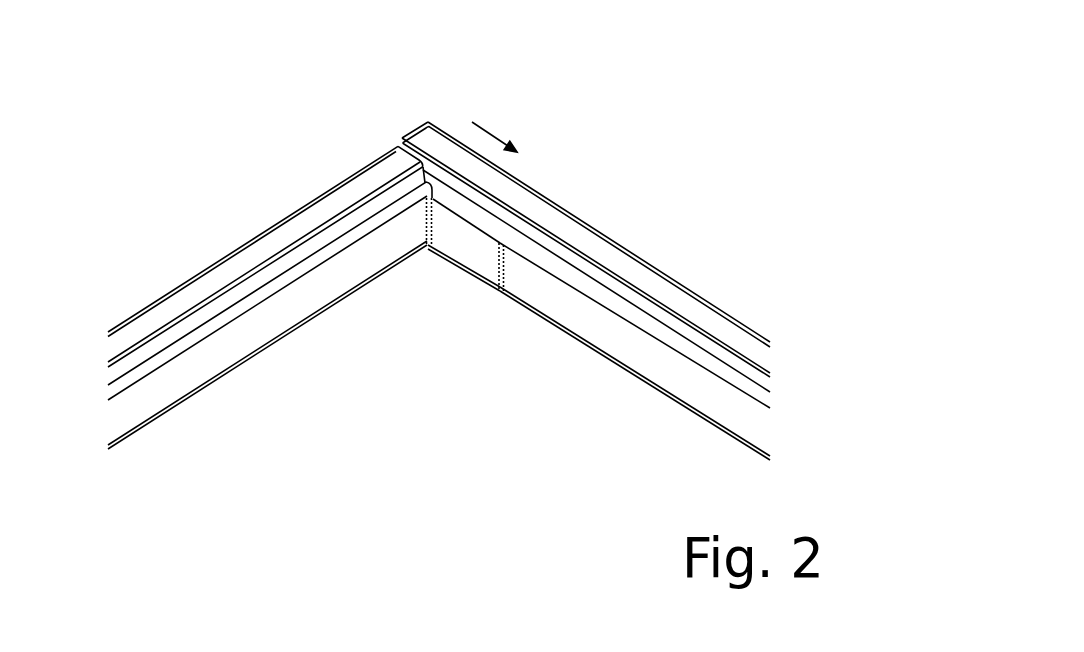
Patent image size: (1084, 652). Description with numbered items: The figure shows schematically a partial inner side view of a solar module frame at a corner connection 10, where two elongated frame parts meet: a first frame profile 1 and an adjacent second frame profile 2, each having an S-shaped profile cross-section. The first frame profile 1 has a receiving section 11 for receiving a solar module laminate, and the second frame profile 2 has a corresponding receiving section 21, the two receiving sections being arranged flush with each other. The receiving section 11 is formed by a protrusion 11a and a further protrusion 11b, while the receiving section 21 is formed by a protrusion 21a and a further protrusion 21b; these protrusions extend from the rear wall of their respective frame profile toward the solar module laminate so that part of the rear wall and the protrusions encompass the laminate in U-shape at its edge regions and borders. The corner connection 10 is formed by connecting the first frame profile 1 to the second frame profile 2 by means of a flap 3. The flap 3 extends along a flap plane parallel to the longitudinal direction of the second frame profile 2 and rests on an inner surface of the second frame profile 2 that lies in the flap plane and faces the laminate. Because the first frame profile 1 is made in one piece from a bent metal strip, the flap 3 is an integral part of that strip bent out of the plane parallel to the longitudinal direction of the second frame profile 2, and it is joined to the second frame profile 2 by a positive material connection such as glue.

The corner connection 10 is at (484, 263).
The first frame profile 1 is at (270, 264).
The receiving section 11 is at (282, 258).
The protrusion 11a is at (337, 202).
The further protrusion 11b is at (168, 355).
The second frame profile 2 is at (631, 297).
The receiving section 21 is at (630, 291).
The protrusion 21a is at (722, 312).
The further protrusion 21b is at (670, 333).
The flap 3 is at (487, 257).